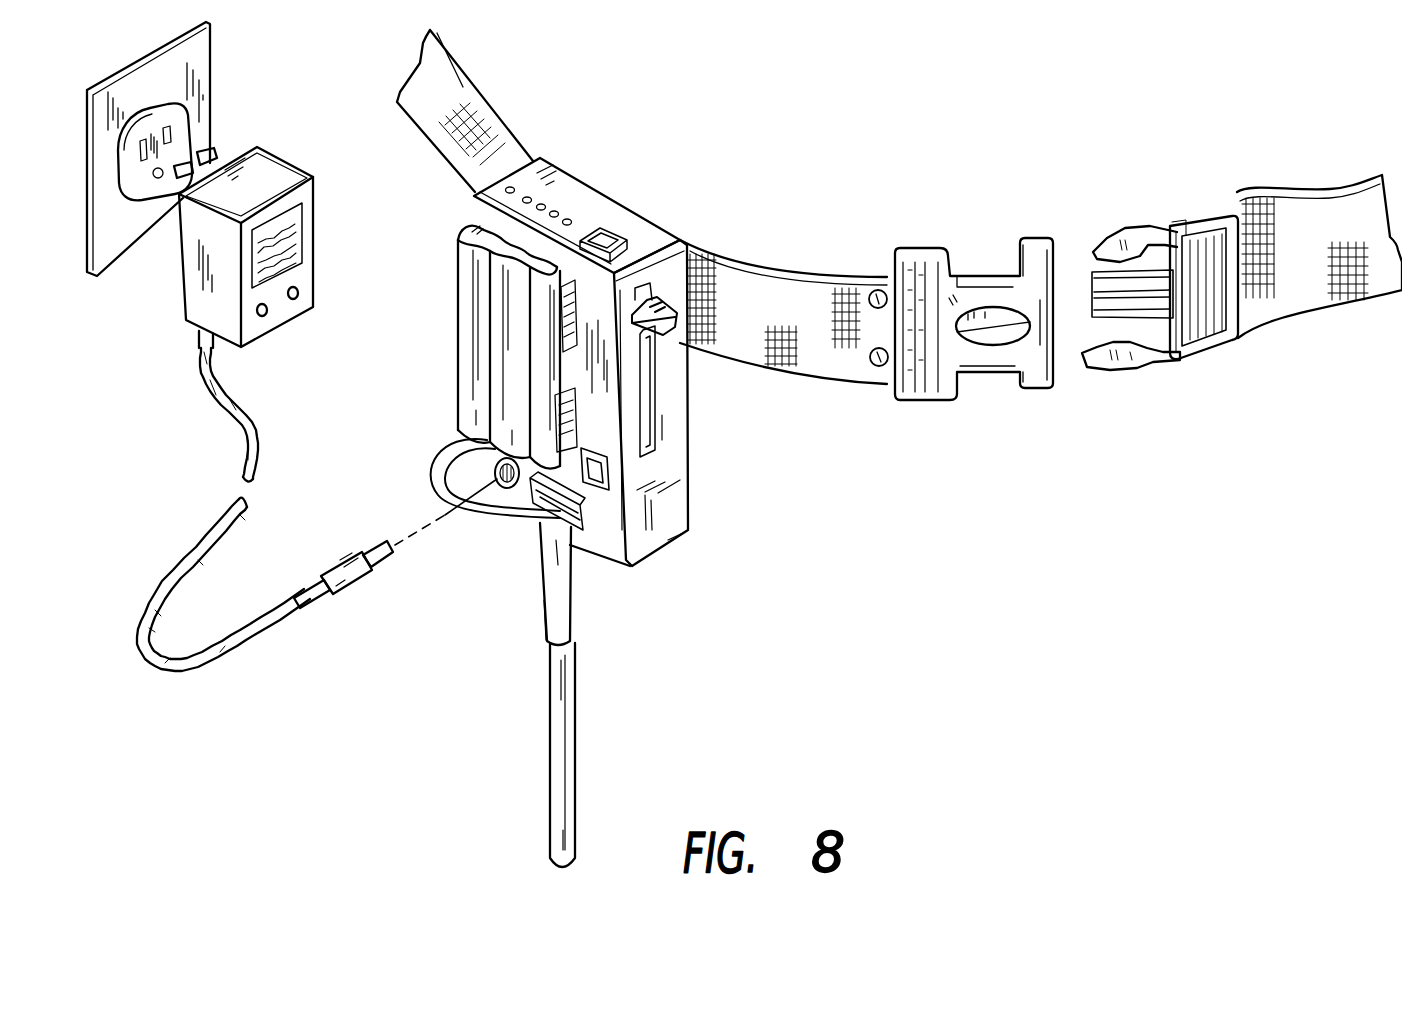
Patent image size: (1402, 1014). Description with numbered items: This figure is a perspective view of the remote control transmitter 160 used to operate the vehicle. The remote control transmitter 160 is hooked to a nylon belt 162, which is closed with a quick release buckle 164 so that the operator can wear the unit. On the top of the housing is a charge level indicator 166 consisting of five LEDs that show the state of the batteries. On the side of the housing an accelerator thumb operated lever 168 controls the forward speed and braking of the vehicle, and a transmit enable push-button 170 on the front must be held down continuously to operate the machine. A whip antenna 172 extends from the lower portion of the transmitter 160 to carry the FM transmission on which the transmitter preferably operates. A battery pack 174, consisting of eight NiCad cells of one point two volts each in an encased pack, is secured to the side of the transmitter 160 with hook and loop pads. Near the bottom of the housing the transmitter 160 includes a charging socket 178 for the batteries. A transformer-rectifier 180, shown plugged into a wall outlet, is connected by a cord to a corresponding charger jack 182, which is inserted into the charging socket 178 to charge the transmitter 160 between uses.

The remote control transmitter 160 is at (699, 138).
The nylon belt 162 is at (863, 370).
The quick release buckle 164 is at (1030, 390).
The charge level indicator 166 is at (527, 200).
The accelerator thumb operated lever 168 is at (677, 343).
The transmit enable push-button 170 is at (593, 490).
The whip antenna 172 is at (570, 700).
The battery pack 174 is at (466, 284).
The charging socket 178 is at (503, 483).
The transformer-rectifier 180 is at (183, 291).
The charger jack 182 is at (335, 597).